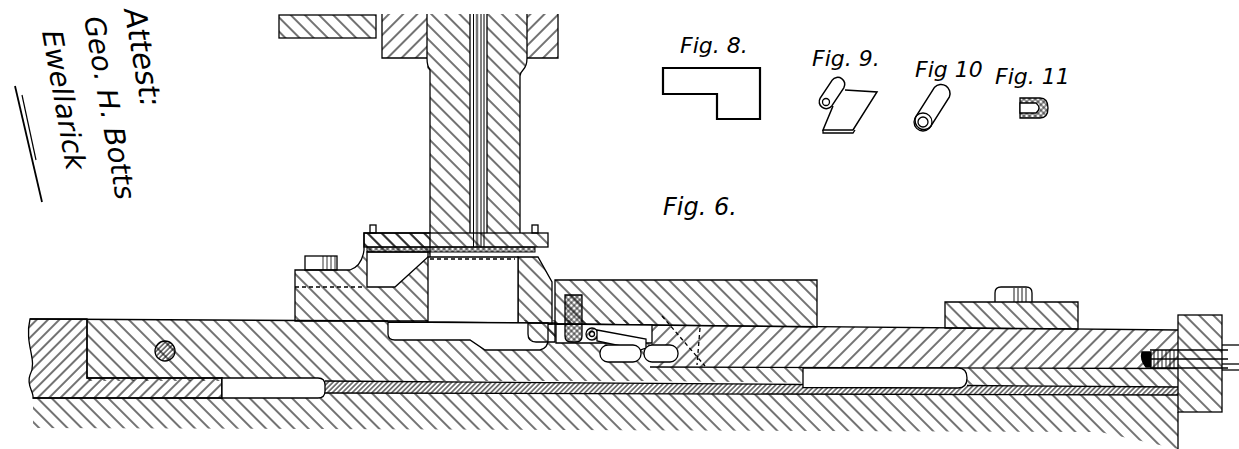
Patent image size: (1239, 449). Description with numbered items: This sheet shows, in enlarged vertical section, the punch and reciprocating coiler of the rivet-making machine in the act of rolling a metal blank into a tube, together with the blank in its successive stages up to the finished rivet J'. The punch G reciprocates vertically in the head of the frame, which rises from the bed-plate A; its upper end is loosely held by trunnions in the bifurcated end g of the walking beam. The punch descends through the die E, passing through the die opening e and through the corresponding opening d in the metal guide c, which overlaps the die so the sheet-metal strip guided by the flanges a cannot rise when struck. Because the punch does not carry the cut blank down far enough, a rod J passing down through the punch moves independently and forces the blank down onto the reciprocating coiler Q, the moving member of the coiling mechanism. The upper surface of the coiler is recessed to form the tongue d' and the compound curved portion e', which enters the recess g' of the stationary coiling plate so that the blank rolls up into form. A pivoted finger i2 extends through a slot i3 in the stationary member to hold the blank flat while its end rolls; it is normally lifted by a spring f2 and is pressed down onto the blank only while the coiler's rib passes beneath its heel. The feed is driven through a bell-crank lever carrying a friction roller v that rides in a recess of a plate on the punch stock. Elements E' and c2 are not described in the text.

In FIG. 6, the punch G is at (521, 178).
In FIG. 6, the reciprocating rod J is at (505, 130).
In FIG. 6, the flanges a is at (548, 240).
In FIG. 6, the metal guide c is at (376, 231).
In FIG. 6, the opening in guide d is at (542, 219).
In FIG. 6, the die E is at (347, 277).
In FIG. 6, the block wedge E' is at (543, 287).
In FIG. 6, the opening in die e is at (473, 290).
In FIG. 6, the compound curved portion e' is at (471, 336).
In FIG. 6, the spring f2 is at (582, 300).
In FIG. 6, the finger i2 is at (610, 331).
In FIG. 6, the slot i3 is at (639, 344).
In FIG. 6, the pocket c2 is at (577, 345).
In FIG. 6, the friction roller v is at (675, 396).
In FIG. 6, the bed-plate A is at (603, 384).
In FIG. 6, the bifurcated end of beam g is at (1011, 336).
In FIG. 6, the recess in stationary plate g' is at (885, 378).
In FIG. 6, the tongue d' is at (700, 336).
In FIG. 6, the reciprocating coiler Q is at (295, 377).
In FIG. 8, the rivet J' is at (711, 93).
In FIG. 9, the rivet J' is at (848, 105).
In FIG. 10, the rivet J' is at (932, 110).
In FIG. 11, the rivet J' is at (1034, 120).